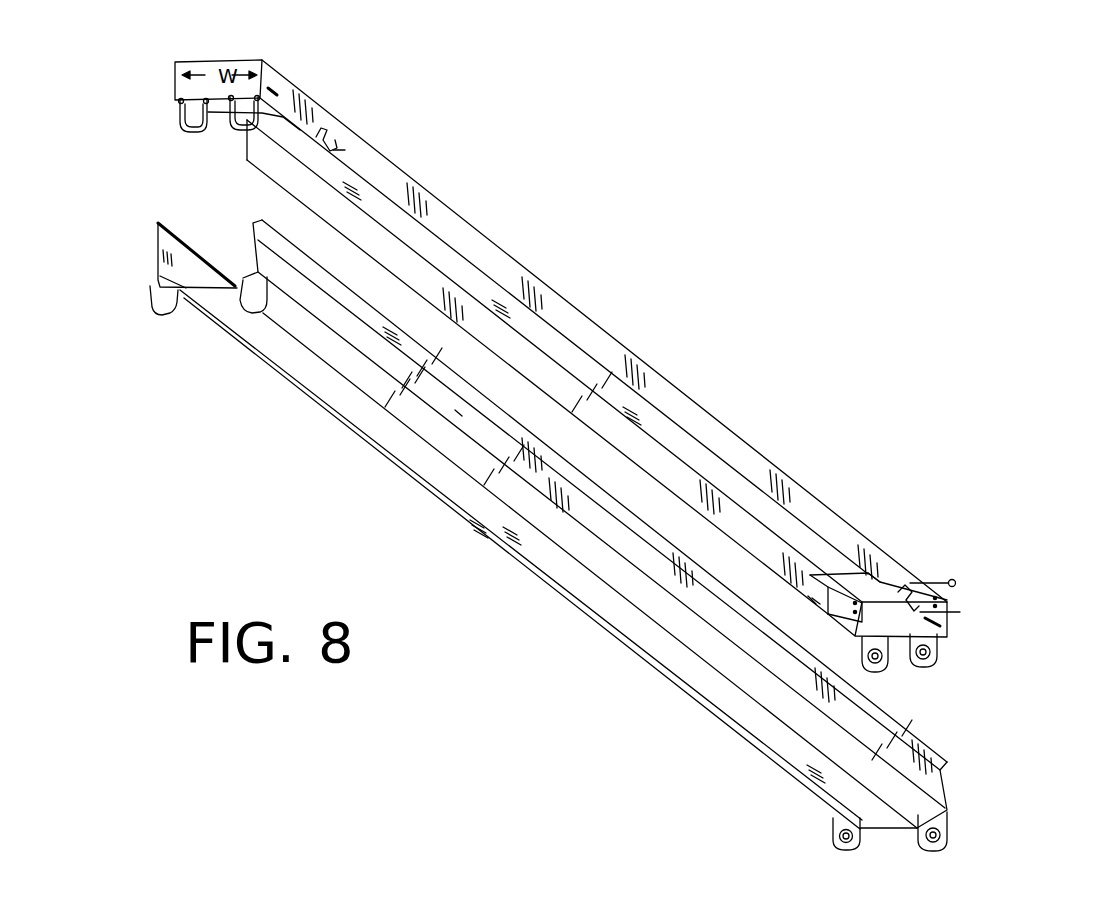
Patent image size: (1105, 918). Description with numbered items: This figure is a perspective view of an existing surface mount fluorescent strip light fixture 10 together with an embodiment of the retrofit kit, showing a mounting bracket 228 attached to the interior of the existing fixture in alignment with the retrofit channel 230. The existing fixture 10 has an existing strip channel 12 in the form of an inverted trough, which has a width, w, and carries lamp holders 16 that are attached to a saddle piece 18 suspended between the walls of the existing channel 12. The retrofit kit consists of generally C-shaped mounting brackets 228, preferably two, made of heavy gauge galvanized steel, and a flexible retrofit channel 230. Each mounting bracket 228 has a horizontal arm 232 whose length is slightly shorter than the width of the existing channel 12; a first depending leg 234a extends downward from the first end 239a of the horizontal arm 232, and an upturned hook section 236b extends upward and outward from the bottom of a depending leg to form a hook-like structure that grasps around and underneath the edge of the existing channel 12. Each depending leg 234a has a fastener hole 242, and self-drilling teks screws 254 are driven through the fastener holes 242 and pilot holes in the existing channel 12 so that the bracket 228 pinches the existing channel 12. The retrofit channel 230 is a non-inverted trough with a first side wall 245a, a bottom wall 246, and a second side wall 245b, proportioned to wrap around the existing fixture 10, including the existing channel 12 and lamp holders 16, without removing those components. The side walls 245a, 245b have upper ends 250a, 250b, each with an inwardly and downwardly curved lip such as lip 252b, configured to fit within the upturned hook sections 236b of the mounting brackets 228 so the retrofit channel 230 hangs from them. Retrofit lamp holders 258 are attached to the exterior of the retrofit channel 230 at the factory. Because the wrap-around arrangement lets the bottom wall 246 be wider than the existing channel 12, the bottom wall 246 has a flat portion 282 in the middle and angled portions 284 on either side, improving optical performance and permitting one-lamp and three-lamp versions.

The existing surface mount fluorescent strip light fixture 10 is at (558, 149).
The existing strip channel 12 is at (600, 342).
The lamp holders 16 is at (227, 125).
The saddle piece 18 is at (947, 621).
The mounting brackets 228 is at (283, 117).
The retrofit channel 230 is at (742, 708).
The horizontal arm 232 is at (893, 596).
The first depending leg 234a is at (243, 150).
The second upturned hook section 236b is at (337, 148).
The first end 239a is at (812, 575).
The fastener hole 242 is at (323, 131).
The first side wall 245a is at (160, 260).
The second side wall 245b is at (458, 414).
The bottom wall 246 is at (885, 824).
The upper end of first side wall 250a is at (158, 234).
The upper end of second side wall 250b is at (249, 241).
The second lip 252b is at (255, 222).
The teks screws 254 is at (956, 583).
The retrofit lamp holders 258 is at (165, 317).
The flat portion 282 is at (530, 548).
The angled portions 284 is at (625, 578).